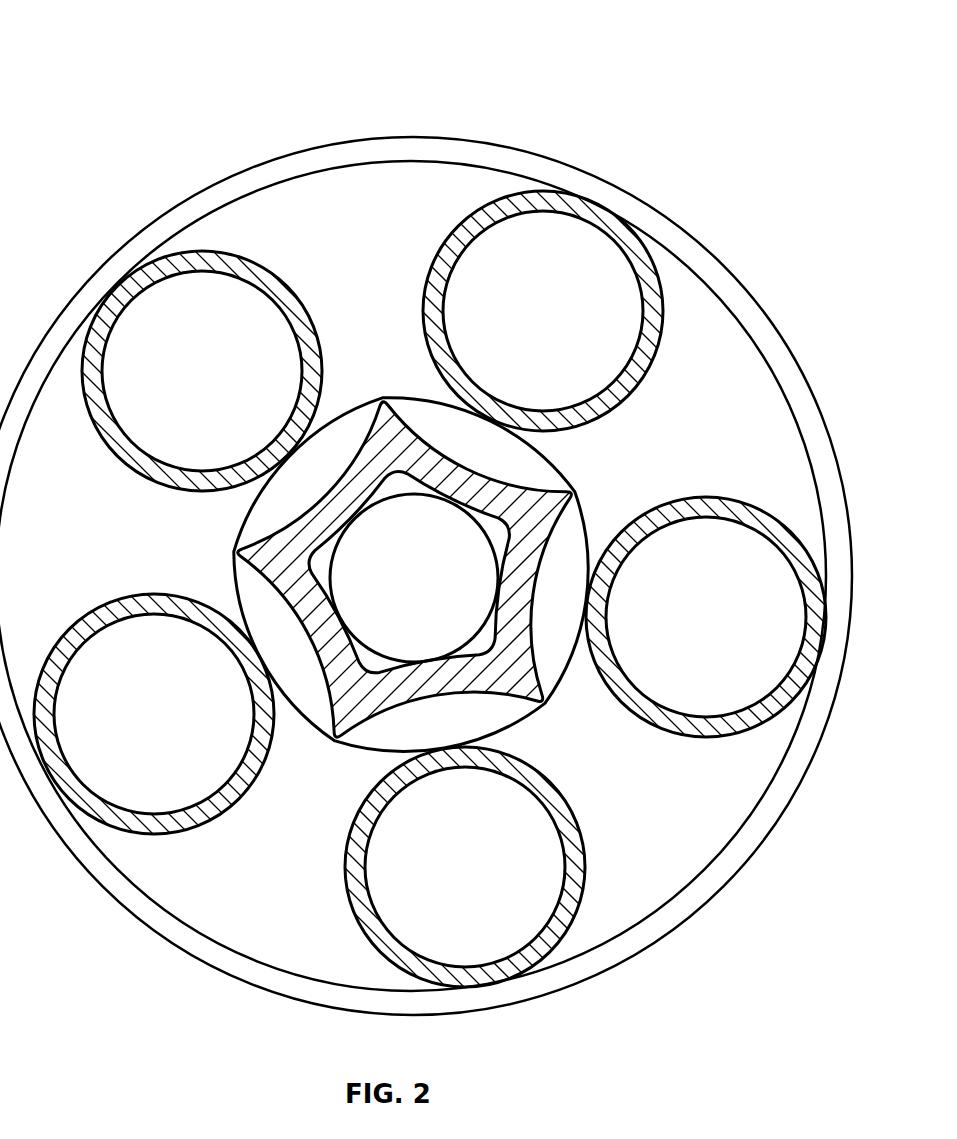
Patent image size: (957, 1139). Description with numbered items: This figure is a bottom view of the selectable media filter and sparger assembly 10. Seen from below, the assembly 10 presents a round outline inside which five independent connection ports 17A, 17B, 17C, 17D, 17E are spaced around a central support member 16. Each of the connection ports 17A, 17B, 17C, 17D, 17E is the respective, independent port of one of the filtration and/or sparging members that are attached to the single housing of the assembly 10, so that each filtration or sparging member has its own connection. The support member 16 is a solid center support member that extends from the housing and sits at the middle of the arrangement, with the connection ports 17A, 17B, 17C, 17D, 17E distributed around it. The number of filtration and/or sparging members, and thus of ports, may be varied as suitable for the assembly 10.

The selectable media filter and sparger assembly 10 is at (92, 30).
The support member 16 is at (341, 731).
The connection port 17A is at (126, 282).
The connection port 17B is at (102, 616).
The connection port 17C is at (556, 800).
The connection port 17D is at (701, 499).
The connection port 17E is at (483, 215).